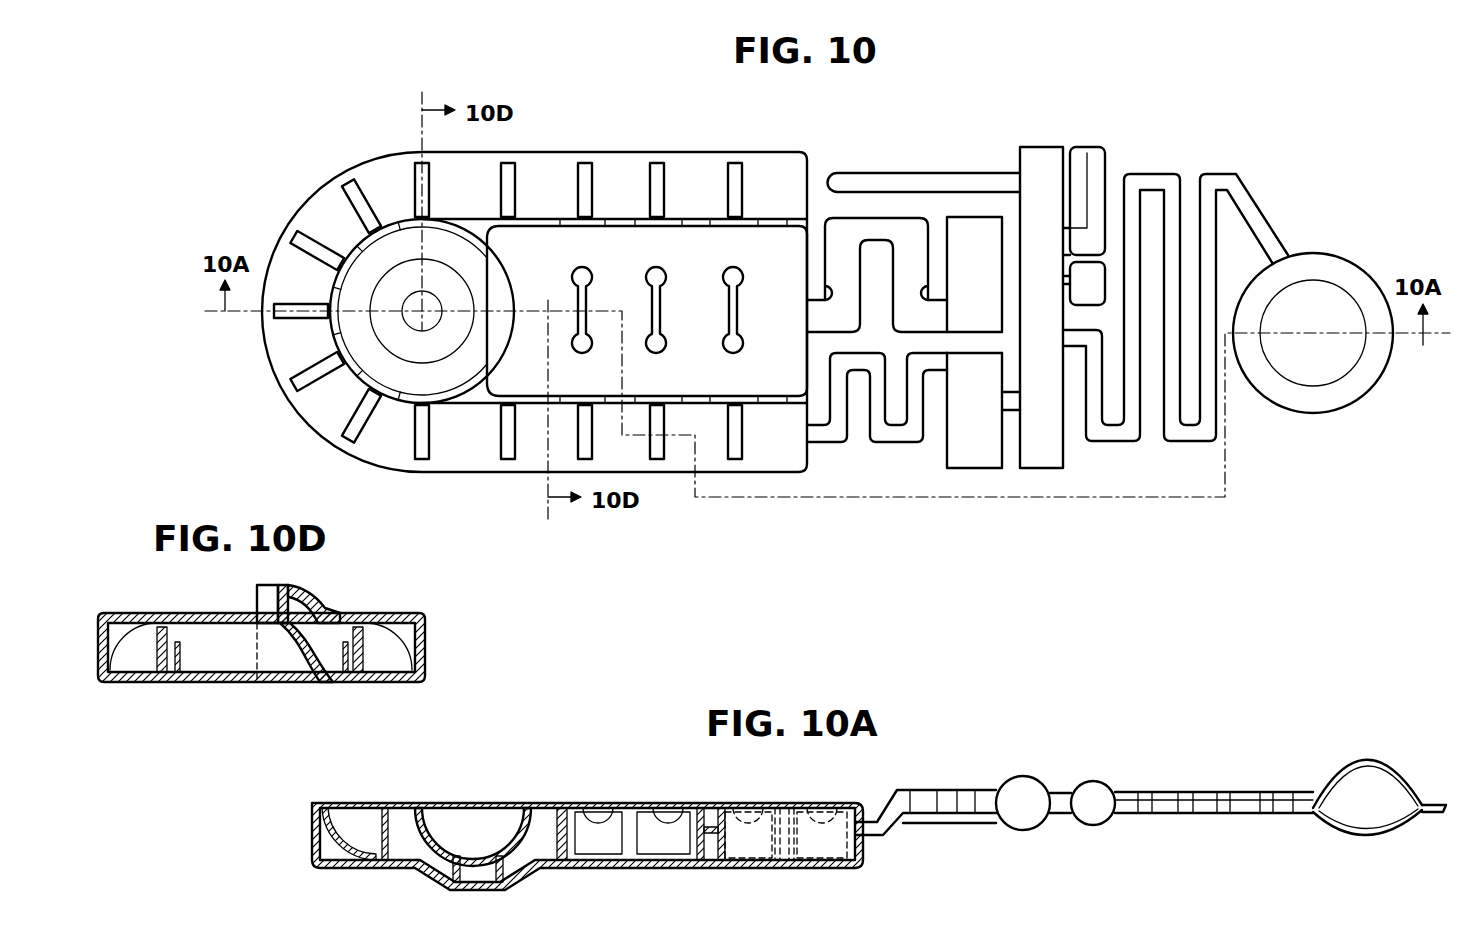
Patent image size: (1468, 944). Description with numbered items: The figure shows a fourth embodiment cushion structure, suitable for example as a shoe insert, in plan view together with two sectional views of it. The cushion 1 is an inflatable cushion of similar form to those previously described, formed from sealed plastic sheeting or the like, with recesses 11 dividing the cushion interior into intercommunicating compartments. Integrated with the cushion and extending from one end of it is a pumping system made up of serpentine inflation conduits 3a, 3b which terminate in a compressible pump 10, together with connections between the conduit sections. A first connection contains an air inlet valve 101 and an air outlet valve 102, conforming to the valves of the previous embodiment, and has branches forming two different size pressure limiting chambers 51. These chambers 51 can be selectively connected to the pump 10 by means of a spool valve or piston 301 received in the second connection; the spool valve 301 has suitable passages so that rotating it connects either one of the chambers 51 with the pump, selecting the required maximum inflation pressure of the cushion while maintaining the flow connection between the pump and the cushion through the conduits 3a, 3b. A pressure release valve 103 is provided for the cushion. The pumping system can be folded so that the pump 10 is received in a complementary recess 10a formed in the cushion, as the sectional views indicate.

In FIG. 10, the damper body 1 is at (698, 148).
In FIG. 10, the recesses 11 is at (656, 277).
In FIG. 10A, the recesses 11 is at (633, 855).
In FIG. 10, the serpentine inflation conduit 3a is at (886, 441).
In FIG. 10, the serpentine inflation conduit 3b is at (1178, 434).
In FIG. 10, the air inlet valve 101 is at (968, 362).
In FIG. 10, the air outlet valve 102 is at (981, 458).
In FIG. 10, the pressure release valve 103 is at (973, 228).
In FIG. 10, the spool valve 301 is at (1047, 458).
In FIG. 10, the pressure limiting chambers 51 is at (1088, 175).
In FIG. 10, the compressible pump 10 is at (1312, 373).
In FIG. 10A, the compressible pump 10 is at (1363, 760).
In FIG. 10A, the recess 10a is at (482, 812).